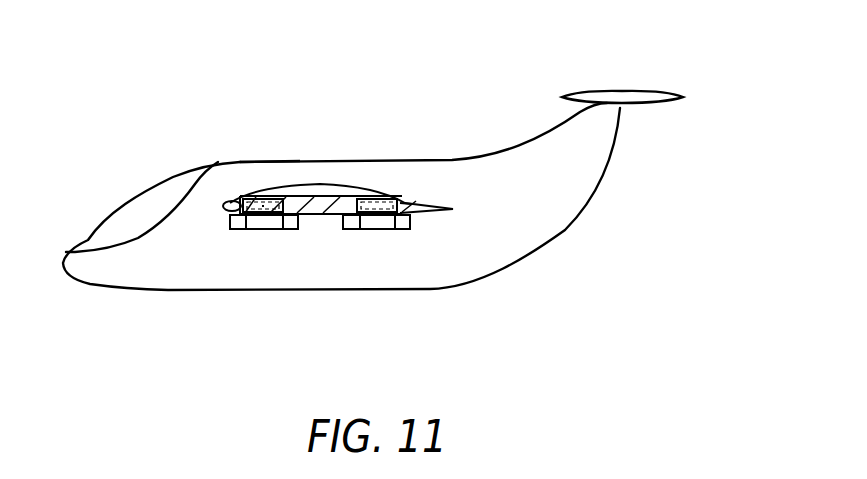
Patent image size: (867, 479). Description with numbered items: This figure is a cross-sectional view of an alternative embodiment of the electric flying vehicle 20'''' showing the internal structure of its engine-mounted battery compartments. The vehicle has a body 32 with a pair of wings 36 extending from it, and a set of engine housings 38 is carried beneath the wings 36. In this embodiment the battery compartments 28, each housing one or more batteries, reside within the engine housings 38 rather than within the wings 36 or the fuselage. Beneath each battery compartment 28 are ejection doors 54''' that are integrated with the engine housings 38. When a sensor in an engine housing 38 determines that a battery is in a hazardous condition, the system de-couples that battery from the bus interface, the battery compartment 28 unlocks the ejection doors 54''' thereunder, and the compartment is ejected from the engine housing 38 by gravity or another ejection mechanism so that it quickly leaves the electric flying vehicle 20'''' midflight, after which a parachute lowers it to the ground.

The electric flying vehicle 20'''' is at (373, 156).
The wings 36 is at (326, 185).
The ejection doors 54''' is at (198, 273).
The battery compartment 28 is at (277, 208).
The body 32 is at (257, 160).
The engine housings 38 is at (237, 203).